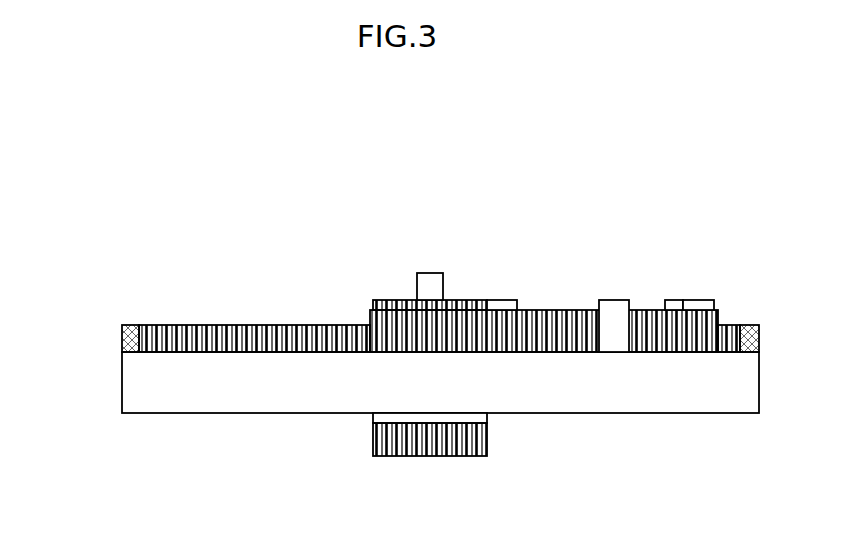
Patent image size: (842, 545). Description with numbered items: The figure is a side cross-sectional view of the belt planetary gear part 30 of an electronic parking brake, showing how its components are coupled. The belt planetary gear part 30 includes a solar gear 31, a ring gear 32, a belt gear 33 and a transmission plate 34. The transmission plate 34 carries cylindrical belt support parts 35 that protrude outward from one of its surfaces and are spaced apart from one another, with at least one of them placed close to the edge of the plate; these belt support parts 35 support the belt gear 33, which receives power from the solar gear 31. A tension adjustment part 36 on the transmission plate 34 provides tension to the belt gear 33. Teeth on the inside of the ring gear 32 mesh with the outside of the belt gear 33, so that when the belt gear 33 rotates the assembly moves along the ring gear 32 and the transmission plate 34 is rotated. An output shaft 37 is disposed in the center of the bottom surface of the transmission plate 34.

The belt planetary gear part 30 is at (397, 337).
The solar gear 31 is at (397, 301).
The ring gear 32 is at (122, 324).
The belt gear 33 is at (368, 318).
The transmission plate 34 is at (140, 400).
The belt support part 35 is at (500, 305).
The tension adjustment part 36 is at (612, 307).
The output shaft 37 is at (487, 447).